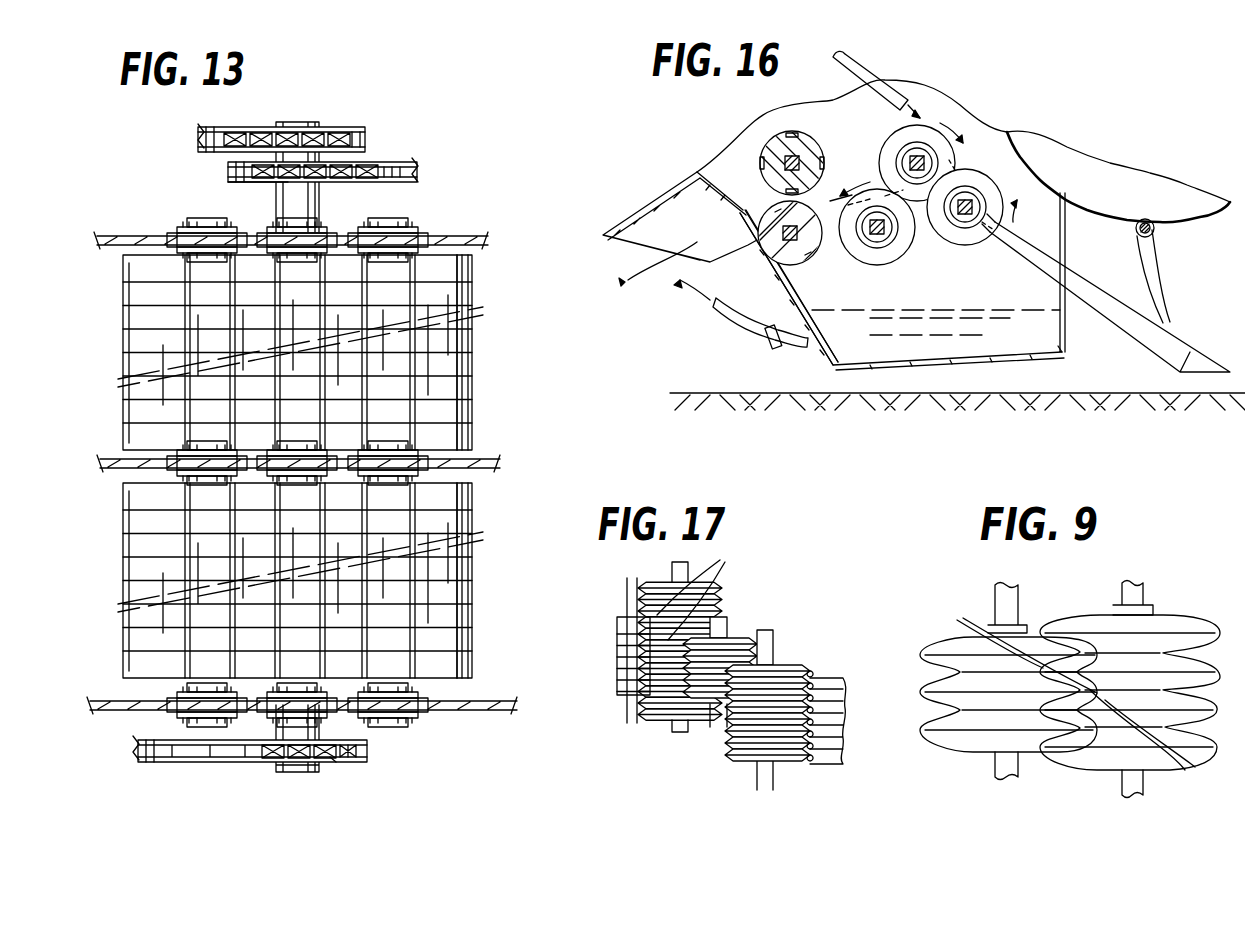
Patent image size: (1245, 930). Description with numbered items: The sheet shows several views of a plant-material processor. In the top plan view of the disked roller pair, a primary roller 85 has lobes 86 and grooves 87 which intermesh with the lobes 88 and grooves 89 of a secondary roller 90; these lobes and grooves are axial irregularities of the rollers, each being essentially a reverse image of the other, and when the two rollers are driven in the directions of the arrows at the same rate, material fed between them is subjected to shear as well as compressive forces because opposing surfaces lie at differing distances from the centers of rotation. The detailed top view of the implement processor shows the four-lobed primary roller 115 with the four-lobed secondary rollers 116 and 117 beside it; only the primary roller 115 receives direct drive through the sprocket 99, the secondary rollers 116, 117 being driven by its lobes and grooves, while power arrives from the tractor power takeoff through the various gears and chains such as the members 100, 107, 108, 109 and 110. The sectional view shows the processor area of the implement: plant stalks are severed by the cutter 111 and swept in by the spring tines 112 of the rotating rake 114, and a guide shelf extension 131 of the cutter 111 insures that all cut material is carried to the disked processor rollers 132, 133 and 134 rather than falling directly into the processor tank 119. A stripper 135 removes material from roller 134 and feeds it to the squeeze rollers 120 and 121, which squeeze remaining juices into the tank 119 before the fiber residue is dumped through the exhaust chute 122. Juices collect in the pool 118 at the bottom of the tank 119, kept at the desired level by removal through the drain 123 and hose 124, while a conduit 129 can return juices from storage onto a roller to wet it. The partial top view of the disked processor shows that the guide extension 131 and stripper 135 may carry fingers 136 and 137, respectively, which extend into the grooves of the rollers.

In FIG. 13, the gear or chain 100 is at (346, 131).
In FIG. 13, the gear or chain 108 is at (400, 161).
In FIG. 13, the gear or chain 109 is at (202, 148).
In FIG. 13, the sprocket 99 is at (244, 187).
In FIG. 13, the secondary roller 117 is at (146, 254).
In FIG. 13, the primary roller 115 is at (314, 272).
In FIG. 13, the secondary roller 116 is at (462, 293).
In FIG. 13, the gear or chain 110 is at (190, 762).
In FIG. 13, the gear or chain 107 is at (332, 758).
In FIG. 16, the conduit 129 is at (860, 65).
In FIG. 16, the processor roller 132 is at (927, 130).
In FIG. 17, the processor roller 132 is at (734, 638).
In FIG. 16, the processor roller 133 is at (970, 166).
In FIG. 17, the processor roller 133 is at (733, 768).
In FIG. 16, the processor roller 134 is at (899, 263).
In FIG. 17, the processor roller 134 is at (720, 600).
In FIG. 16, the stripper 135 is at (830, 205).
In FIG. 17, the stripper 135 is at (617, 660).
In FIG. 16, the rotating rake 114 is at (1080, 150).
In FIG. 16, the squeeze roller 120 is at (765, 138).
In FIG. 16, the squeeze roller 121 is at (794, 266).
In FIG. 16, the exhaust chute 122 is at (657, 216).
In FIG. 16, the hose 124 is at (728, 330).
In FIG. 16, the drain 123 is at (812, 350).
In FIG. 16, the pool 118 is at (960, 353).
In FIG. 16, the processor tank 119 is at (1060, 351).
In FIG. 16, the guide shelf extension 131 is at (1038, 274).
In FIG. 17, the guide shelf extension 131 is at (847, 737).
In FIG. 16, the spring tines or fingers 112 is at (1145, 262).
In FIG. 16, the cutter 111 is at (1176, 345).
In FIG. 17, the fingers 136 is at (705, 592).
In FIG. 17, the fingers 137 is at (811, 671).
In FIG. 9, the grooves 89 is at (1015, 646).
In FIG. 9, the lobes 86 is at (1054, 626).
In FIG. 9, the lobes 88 is at (1090, 656).
In FIG. 9, the primary roller 85 is at (1105, 795).
In FIG. 9, the secondary roller 90 is at (1035, 780).
In FIG. 9, the grooves 87 is at (1172, 766).